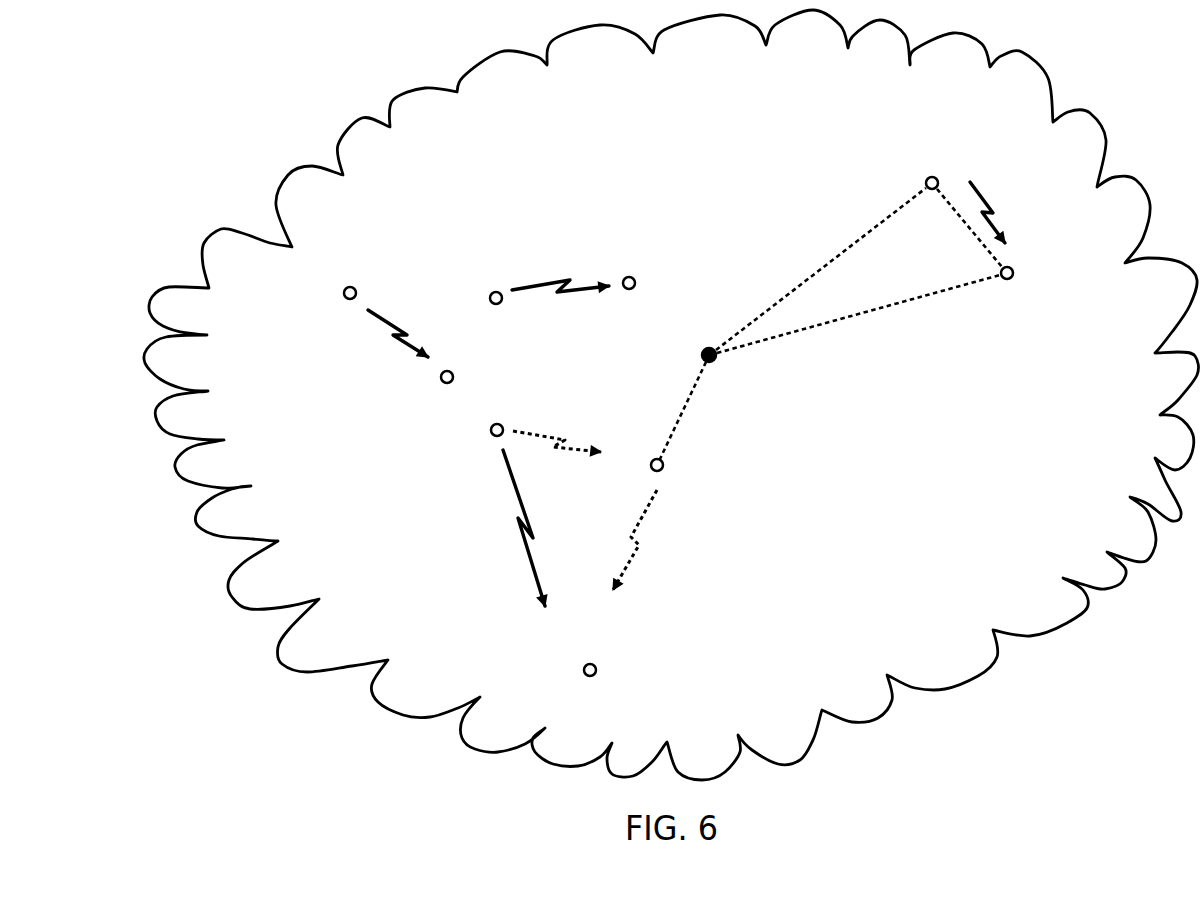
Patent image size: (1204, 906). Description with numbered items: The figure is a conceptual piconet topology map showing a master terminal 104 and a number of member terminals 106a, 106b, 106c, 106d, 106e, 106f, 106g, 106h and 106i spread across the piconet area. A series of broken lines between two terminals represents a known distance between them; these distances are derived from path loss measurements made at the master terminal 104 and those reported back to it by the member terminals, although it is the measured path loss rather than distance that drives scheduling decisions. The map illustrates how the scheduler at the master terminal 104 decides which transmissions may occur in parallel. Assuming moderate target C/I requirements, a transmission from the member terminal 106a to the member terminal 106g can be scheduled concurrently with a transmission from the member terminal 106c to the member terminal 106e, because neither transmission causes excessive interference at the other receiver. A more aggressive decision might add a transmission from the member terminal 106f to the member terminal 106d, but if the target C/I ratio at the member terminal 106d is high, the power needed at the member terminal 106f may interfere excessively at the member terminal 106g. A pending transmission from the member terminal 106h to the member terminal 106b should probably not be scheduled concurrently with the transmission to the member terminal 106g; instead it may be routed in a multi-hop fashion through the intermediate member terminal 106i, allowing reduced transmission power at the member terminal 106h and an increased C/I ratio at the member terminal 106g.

The master terminal 104 is at (713, 362).
The member terminal 106a is at (343, 289).
The member terminal 106b is at (583, 669).
The member terminal 106c is at (932, 176).
The member terminal 106d is at (635, 279).
The member terminal 106e is at (1007, 280).
The member terminal 106f is at (489, 294).
The member terminal 106g is at (442, 382).
The member terminal 106h is at (491, 436).
The member terminal 106i is at (651, 471).